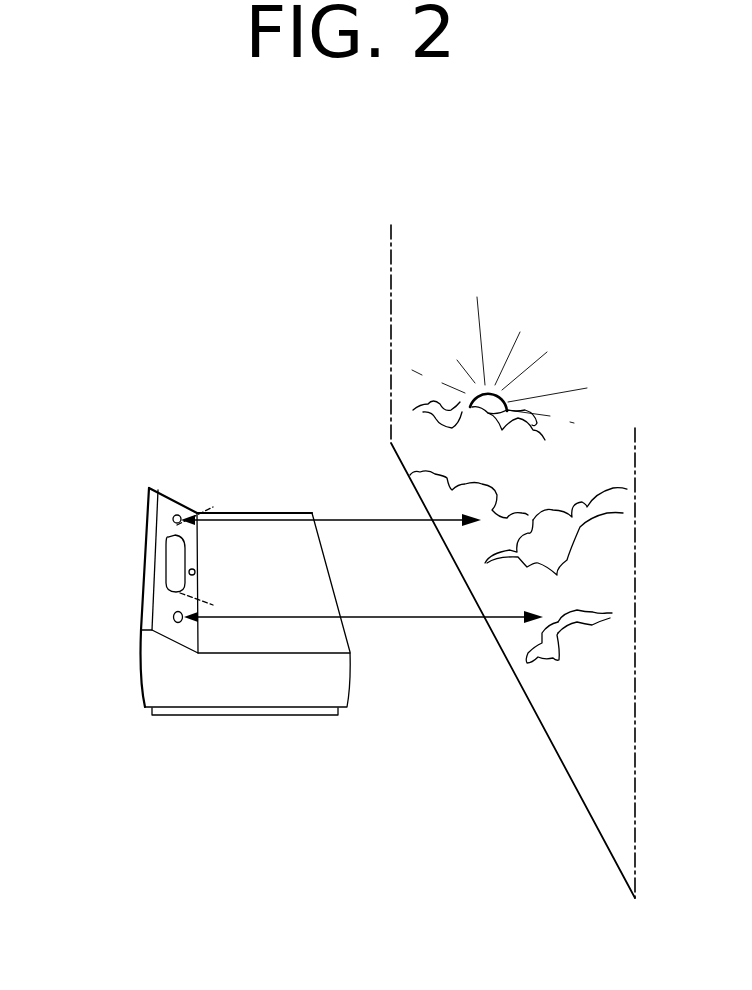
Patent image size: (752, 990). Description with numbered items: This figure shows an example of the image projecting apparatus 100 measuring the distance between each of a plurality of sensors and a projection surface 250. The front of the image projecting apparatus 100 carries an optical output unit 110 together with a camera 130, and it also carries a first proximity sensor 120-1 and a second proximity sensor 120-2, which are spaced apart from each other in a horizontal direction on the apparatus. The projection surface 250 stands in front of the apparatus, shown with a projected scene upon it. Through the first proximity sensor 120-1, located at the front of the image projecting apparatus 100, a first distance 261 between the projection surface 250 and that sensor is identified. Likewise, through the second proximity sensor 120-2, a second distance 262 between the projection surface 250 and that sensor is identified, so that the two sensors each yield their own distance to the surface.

The image projecting apparatus 100 is at (117, 683).
The optical output unit 110 is at (166, 548).
The first proximity sensor 120-1 is at (181, 514).
The second proximity sensor 120-2 is at (176, 614).
The camera 130 is at (189, 571).
The projection surface 250 is at (570, 677).
The first distance 261 is at (330, 518).
The second distance 262 is at (390, 620).